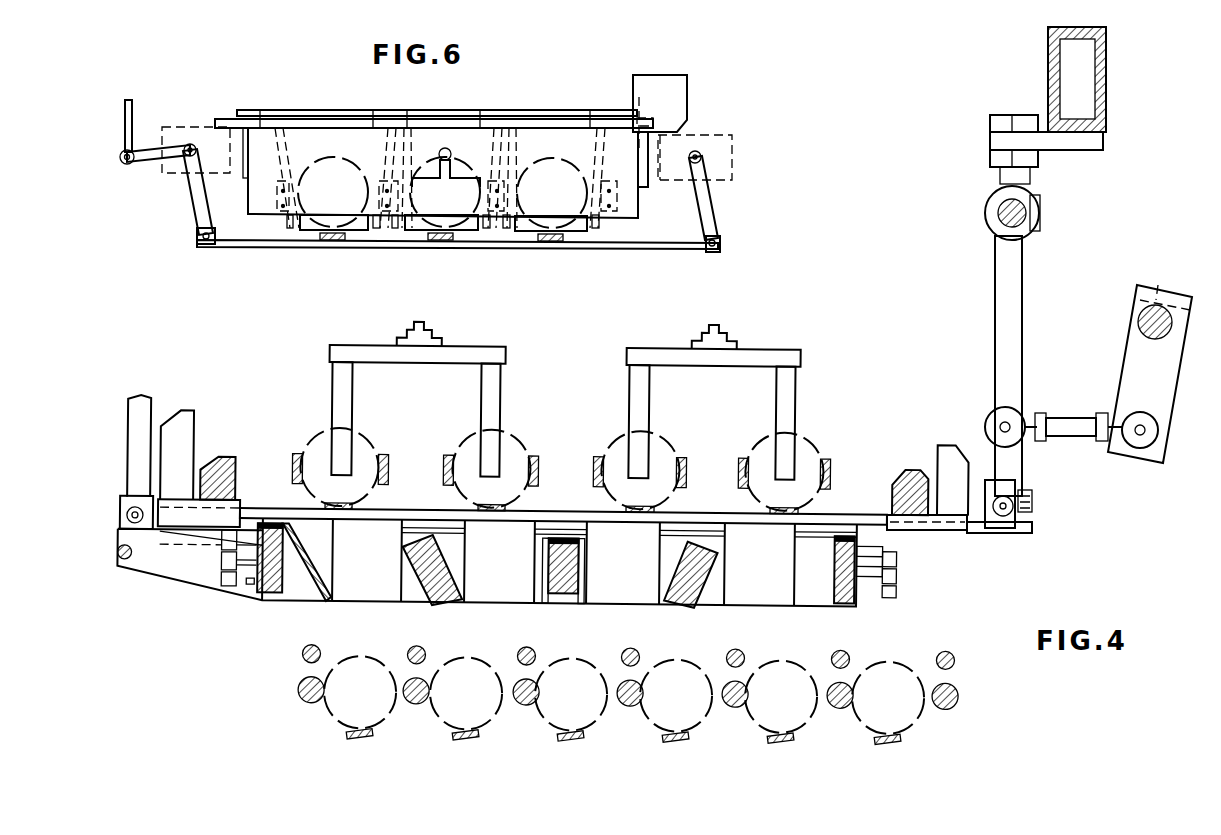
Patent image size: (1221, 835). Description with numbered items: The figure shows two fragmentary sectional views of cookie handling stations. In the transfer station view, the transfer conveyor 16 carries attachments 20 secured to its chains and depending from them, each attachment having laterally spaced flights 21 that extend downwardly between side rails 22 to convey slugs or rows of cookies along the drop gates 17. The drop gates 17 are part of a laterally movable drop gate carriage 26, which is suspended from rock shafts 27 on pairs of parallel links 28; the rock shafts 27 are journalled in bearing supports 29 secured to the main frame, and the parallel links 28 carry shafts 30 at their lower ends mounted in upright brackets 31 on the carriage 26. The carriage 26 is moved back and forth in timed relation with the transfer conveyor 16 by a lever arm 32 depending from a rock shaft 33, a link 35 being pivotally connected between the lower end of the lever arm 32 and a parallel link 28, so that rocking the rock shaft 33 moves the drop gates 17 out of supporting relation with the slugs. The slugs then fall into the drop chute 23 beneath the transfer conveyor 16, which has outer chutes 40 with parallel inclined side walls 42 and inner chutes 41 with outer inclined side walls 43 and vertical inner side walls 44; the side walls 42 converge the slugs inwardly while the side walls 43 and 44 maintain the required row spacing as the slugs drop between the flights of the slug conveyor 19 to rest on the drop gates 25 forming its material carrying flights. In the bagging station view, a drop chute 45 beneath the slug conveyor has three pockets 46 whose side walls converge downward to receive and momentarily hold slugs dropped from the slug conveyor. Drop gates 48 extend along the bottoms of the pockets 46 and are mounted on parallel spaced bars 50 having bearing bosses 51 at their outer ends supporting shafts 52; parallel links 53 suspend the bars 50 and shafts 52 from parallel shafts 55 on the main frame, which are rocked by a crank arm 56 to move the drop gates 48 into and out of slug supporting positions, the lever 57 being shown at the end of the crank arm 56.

In FIG. 4, the transfer conveyor 16 is at (738, 328).
In FIG. 4, the drop gates 17 is at (355, 504).
In FIG. 4, the slug conveyor 19 is at (960, 696).
In FIG. 4, the attachments 20 is at (328, 350).
In FIG. 4, the flights 21 is at (352, 406).
In FIG. 4, the side rails 22 is at (292, 453).
In FIG. 4, the drop chute 23 is at (300, 596).
In FIG. 4, the drop gates 25 is at (366, 736).
In FIG. 4, the drop gate carriage 26 is at (1002, 535).
In FIG. 4, the rock shafts 27 is at (1030, 211).
In FIG. 4, the parallel links 28 is at (995, 355).
In FIG. 4, the bearing supports 29 is at (990, 196).
In FIG. 4, the shafts 30 is at (1012, 486).
In FIG. 4, the upright brackets 31 is at (1034, 500).
In FIG. 4, the lever arm 32 is at (1160, 452).
In FIG. 4, the rock shaft 33 is at (1138, 320).
In FIG. 4, the link 35 is at (1065, 412).
In FIG. 4, the outer chutes 40 is at (350, 592).
In FIG. 4, the inner chutes 41 is at (496, 596).
In FIG. 4, the side walls 42 is at (328, 568).
In FIG. 4, the outer inclined side walls 43 is at (452, 572).
In FIG. 4, the inner side walls 44 is at (548, 583).
In FIG. 6, the drop chute 45 is at (652, 193).
In FIG. 6, the pockets 46 is at (283, 152).
In FIG. 6, the drop gates 48 is at (345, 250).
In FIG. 6, the bars 50 is at (292, 249).
In FIG. 6, the bearing bosses 51 is at (196, 246).
In FIG. 6, the shafts 52 is at (210, 246).
In FIG. 6, the parallel links 53 is at (193, 202).
In FIG. 6, the parallel shafts 55 is at (190, 144).
In FIG. 6, the crank arm 56 is at (146, 172).
In FIG. 6, the lever rod 57 is at (124, 113).